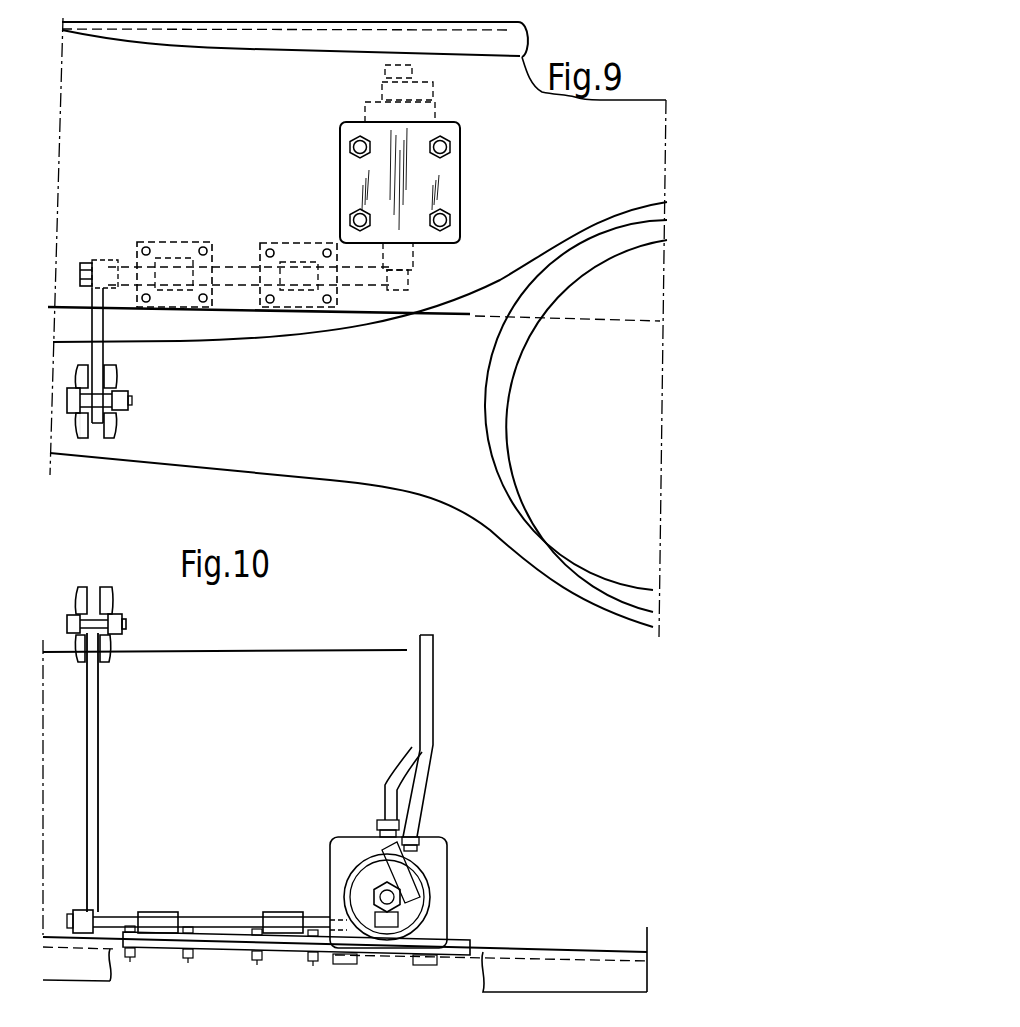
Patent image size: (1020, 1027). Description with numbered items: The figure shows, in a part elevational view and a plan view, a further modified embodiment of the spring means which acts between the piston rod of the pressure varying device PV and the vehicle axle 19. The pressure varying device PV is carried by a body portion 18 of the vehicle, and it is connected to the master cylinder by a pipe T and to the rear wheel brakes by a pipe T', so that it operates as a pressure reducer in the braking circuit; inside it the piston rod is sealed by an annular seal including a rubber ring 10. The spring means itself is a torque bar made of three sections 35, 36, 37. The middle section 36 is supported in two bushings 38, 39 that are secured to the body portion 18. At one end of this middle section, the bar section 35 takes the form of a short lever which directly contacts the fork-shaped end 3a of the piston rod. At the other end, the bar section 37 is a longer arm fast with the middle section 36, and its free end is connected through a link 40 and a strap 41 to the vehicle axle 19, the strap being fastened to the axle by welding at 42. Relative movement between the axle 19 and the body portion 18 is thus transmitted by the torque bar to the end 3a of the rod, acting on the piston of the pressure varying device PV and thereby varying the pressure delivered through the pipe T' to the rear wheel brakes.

In FIG. 9, the body portion 18 is at (530, 60).
In FIG. 10, the body portion 18 is at (537, 975).
In FIG. 9, the vehicle axle 19 is at (322, 468).
In FIG. 10, the vehicle axle 19 is at (257, 663).
In FIG. 9, the pressure varying device PV is at (338, 127).
In FIG. 9, the end of the rod 3a is at (413, 263).
In FIG. 9, the bushing 38 is at (168, 242).
In FIG. 9, the bushing 39 is at (288, 242).
In FIG. 9, the link 40 is at (94, 442).
In FIG. 9, the strap 41 is at (80, 440).
In FIG. 9, the welding 42 is at (118, 427).
In FIG. 10, the bar section 37 is at (97, 689).
In FIG. 10, the bar section 36 is at (222, 915).
In FIG. 10, the rubber ring 10 is at (213, 947).
In FIG. 10, the bar section 35 is at (400, 915).
In FIG. 10, the pipe T is at (385, 782).
In FIG. 10, the pipe T' is at (435, 743).